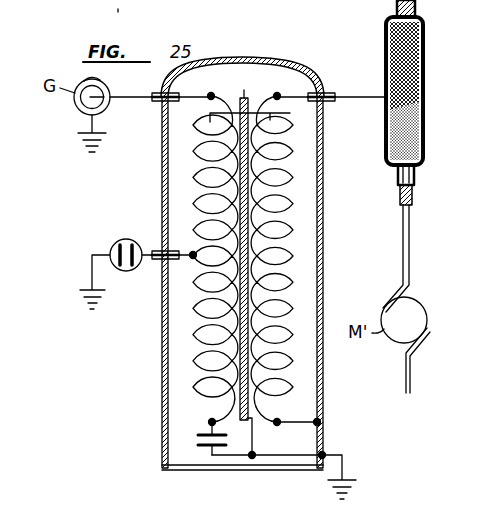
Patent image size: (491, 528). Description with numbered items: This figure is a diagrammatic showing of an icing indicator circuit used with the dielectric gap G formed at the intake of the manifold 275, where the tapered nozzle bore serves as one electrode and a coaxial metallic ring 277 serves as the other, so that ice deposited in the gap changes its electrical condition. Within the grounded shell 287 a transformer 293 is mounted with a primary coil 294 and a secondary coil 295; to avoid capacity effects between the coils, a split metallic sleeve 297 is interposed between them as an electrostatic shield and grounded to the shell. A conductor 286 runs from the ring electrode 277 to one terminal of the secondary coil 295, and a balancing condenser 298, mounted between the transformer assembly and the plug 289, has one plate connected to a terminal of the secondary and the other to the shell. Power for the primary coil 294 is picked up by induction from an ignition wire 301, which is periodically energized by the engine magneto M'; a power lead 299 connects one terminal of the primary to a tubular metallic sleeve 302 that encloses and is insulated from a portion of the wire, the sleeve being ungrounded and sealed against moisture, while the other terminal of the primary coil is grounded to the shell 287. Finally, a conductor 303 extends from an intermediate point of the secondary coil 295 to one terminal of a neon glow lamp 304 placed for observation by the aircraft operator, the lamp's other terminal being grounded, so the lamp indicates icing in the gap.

The manifold 275 is at (80, 104).
The metallic ring 277 is at (101, 87).
The conductor 286 is at (115, 102).
The shell 287 is at (323, 383).
The plug 289 is at (116, 6).
The transformer 293 is at (264, 111).
The primary coil 294 is at (292, 253).
The secondary coil 295 is at (200, 340).
The split metallic sleeve 297 is at (248, 263).
The balancing condenser 298 is at (188, 441).
The power lead 299 is at (346, 93).
The ignition wire 301 is at (412, 228).
The tubular metallic sleeve 302 is at (424, 56).
The conductor 303 is at (145, 263).
The neon glow lamp 304 is at (126, 239).